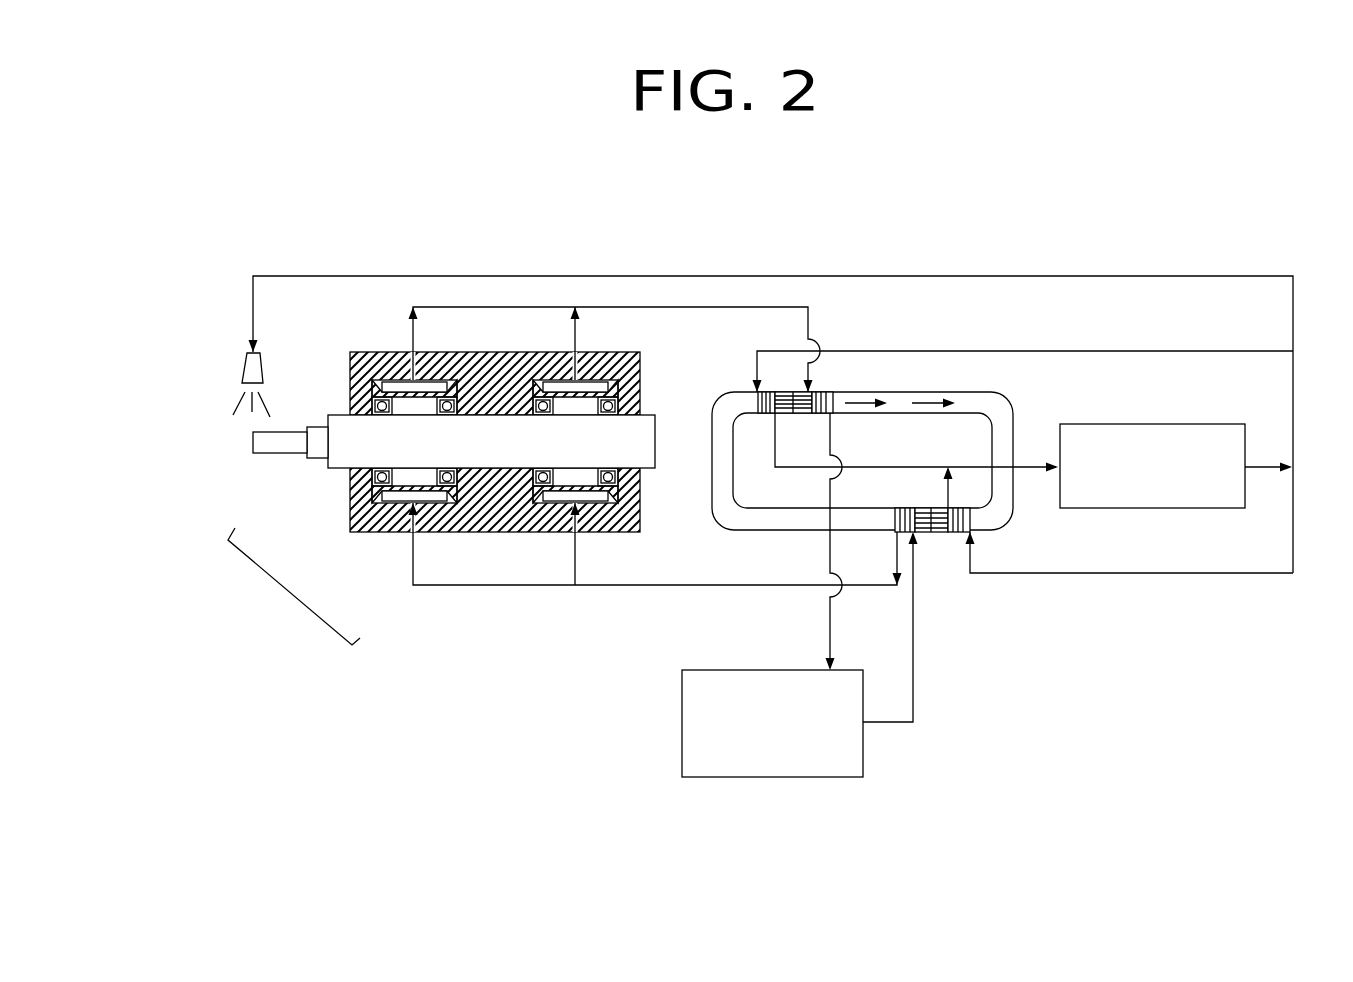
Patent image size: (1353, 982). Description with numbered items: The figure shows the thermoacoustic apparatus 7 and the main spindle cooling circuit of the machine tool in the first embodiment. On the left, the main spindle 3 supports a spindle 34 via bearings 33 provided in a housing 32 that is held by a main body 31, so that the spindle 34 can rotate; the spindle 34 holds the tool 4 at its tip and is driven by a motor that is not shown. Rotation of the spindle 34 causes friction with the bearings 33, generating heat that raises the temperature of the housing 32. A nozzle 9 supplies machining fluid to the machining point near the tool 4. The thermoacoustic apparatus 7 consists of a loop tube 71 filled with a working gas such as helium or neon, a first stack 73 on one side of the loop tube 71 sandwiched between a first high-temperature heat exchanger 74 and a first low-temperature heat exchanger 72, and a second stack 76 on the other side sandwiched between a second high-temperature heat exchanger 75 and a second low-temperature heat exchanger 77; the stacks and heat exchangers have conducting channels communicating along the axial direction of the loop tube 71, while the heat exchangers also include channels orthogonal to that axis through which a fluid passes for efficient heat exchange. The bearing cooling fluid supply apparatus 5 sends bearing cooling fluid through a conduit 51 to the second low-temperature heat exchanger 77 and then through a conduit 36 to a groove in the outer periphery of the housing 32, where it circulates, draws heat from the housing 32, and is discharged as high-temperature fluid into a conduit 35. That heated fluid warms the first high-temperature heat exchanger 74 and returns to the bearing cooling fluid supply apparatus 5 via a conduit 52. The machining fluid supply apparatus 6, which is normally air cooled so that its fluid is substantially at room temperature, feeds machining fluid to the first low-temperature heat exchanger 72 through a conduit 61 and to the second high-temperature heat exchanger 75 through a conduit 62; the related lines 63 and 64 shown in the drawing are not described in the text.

The main spindle 3 is at (287, 591).
The tool 4 is at (280, 443).
The bearing cooling fluid supply apparatus 5 is at (698, 768).
The machining fluid supply apparatus 6 is at (1236, 437).
The thermoacoustic apparatus 7 is at (865, 486).
The nozzle 9 is at (253, 375).
The main body 31 is at (398, 528).
The housing 32 is at (363, 490).
The bearings 33 is at (355, 497).
The spindle 34 is at (350, 452).
The conduit 35 is at (742, 307).
The conduit 36 is at (627, 587).
The conduit 51 is at (916, 648).
The conduit 52 is at (829, 645).
The conduit 61 is at (1075, 349).
The conduit 62 is at (1103, 573).
The machining fluid supply pipe 63 is at (612, 276).
The machining fluid passage 64 is at (885, 467).
The loop tube 71 is at (795, 520).
The first low-temperature heat exchanger 72 is at (757, 395).
The first stack 73 is at (793, 402).
The first high-temperature heat exchanger 74 is at (826, 393).
The second high-temperature heat exchanger 75 is at (975, 526).
The second stack 76 is at (933, 522).
The second low-temperature heat exchanger 77 is at (906, 508).